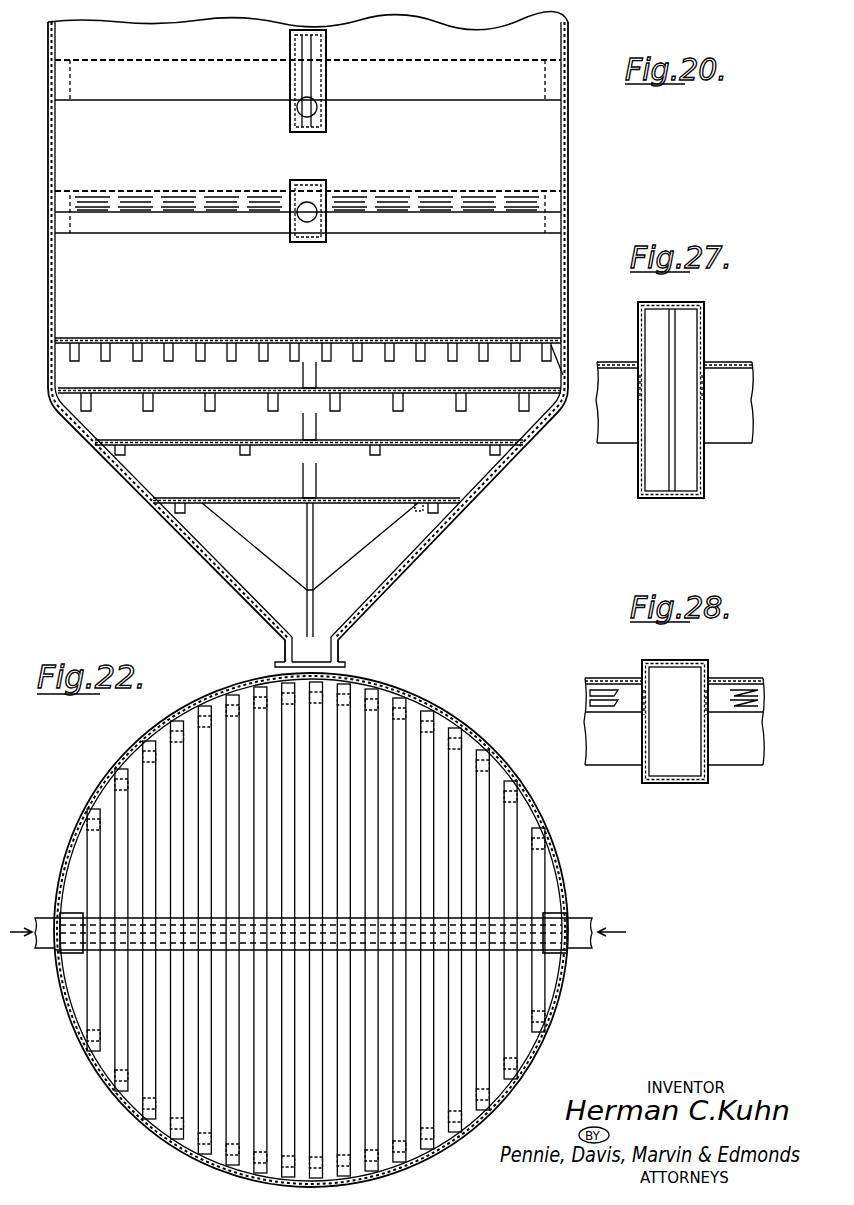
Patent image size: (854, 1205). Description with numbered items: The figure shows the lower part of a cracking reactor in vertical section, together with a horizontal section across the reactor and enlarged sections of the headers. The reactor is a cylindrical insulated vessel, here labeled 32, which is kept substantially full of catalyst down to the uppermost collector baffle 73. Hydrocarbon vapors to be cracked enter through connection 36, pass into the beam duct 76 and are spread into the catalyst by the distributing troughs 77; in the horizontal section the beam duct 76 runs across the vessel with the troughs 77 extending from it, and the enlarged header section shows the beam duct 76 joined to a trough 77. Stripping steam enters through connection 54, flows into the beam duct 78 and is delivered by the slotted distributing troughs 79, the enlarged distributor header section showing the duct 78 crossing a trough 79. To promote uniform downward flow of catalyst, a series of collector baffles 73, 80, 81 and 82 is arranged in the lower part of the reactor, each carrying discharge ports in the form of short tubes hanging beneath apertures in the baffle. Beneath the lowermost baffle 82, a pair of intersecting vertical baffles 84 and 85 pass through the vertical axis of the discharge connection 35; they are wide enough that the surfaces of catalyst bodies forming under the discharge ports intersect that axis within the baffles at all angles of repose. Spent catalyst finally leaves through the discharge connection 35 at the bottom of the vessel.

In FIG. 20, the reaction vessel shell 32 is at (48, 308).
In FIG. 22, the reaction vessel shell 32 is at (88, 812).
In FIG. 20, the discharge connection 35 is at (338, 652).
In FIG. 20, the hydrocarbon inlet connection 36 is at (300, 112).
In FIG. 22, the hydrocarbon inlet connection 36 is at (40, 945).
In FIG. 20, the steam connection 54 is at (308, 222).
In FIG. 20, the collector baffle 73 is at (472, 338).
In FIG. 20, the beam duct 76 is at (290, 43).
In FIG. 22, the beam duct 76 is at (528, 920).
In FIG. 27, the beam duct 76 is at (642, 327).
In FIG. 20, the distributing troughs 77 is at (403, 95).
In FIG. 22, the distributing troughs 77 is at (446, 728).
In FIG. 27, the distributing troughs 77 is at (620, 428).
In FIG. 20, the beam duct 78 is at (292, 240).
In FIG. 28, the beam duct 78 is at (662, 783).
In FIG. 20, the distributing troughs 79 is at (415, 228).
In FIG. 28, the distributing troughs 79 is at (600, 678).
In FIG. 20, the collector baffle 80 is at (400, 388).
In FIG. 20, the collector baffle 81 is at (400, 440).
In FIG. 20, the collector baffle 82 is at (378, 500).
In FIG. 20, the vertical baffle 84 is at (315, 600).
In FIG. 20, the vertical baffle 85 is at (260, 566).